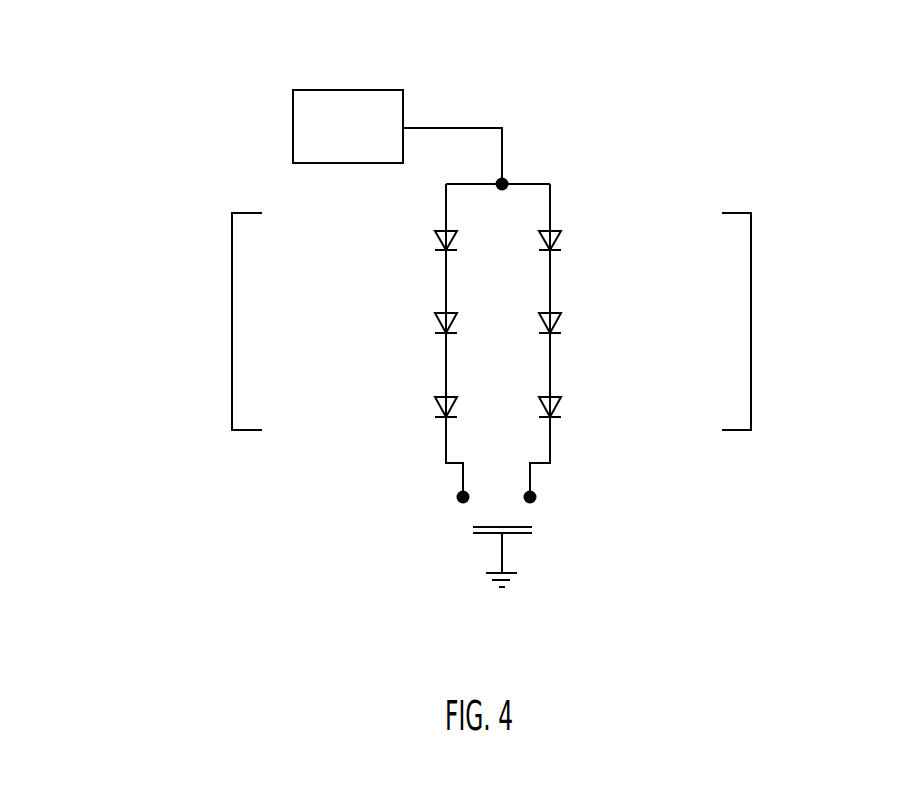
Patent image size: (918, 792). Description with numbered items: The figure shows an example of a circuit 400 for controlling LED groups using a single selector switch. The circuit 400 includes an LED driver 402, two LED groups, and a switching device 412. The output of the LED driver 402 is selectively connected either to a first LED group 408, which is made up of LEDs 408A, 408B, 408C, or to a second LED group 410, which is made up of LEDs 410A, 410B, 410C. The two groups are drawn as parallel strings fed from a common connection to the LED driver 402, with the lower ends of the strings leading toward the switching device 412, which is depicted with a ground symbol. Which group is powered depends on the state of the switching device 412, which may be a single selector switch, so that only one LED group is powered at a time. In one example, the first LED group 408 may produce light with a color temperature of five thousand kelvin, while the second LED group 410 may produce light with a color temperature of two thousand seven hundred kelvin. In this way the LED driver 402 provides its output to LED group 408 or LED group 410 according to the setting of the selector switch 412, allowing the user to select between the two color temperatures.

The circuit 400 is at (150, 85).
The LED driver 402 is at (332, 88).
The LED group 408 is at (232, 325).
The LED 408A is at (423, 243).
The LED 408B is at (423, 327).
The LED 408C is at (423, 410).
The LED group 410 is at (751, 325).
The LED 410A is at (573, 251).
The LED 410B is at (573, 333).
The LED 410C is at (573, 410).
The switching device 412 is at (580, 601).